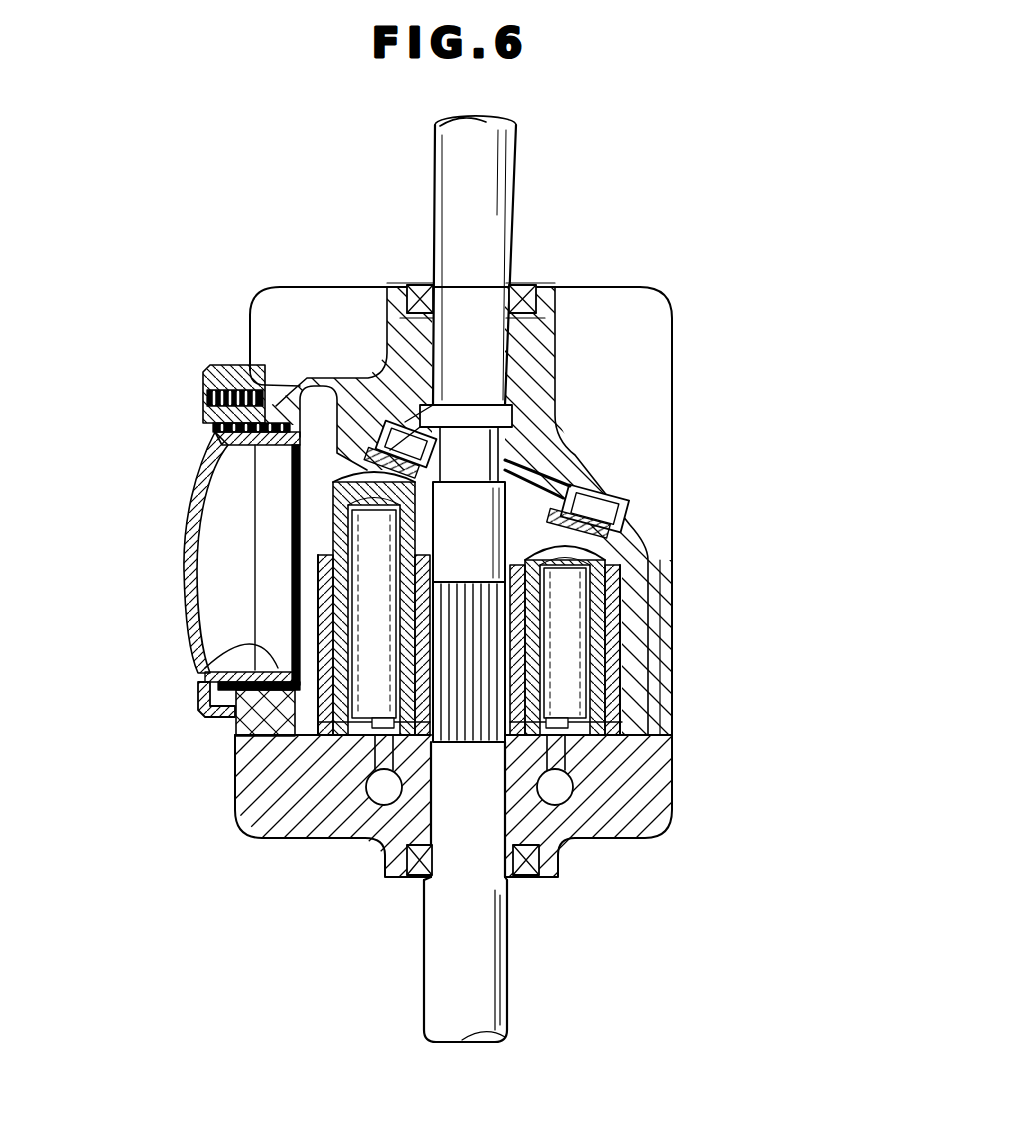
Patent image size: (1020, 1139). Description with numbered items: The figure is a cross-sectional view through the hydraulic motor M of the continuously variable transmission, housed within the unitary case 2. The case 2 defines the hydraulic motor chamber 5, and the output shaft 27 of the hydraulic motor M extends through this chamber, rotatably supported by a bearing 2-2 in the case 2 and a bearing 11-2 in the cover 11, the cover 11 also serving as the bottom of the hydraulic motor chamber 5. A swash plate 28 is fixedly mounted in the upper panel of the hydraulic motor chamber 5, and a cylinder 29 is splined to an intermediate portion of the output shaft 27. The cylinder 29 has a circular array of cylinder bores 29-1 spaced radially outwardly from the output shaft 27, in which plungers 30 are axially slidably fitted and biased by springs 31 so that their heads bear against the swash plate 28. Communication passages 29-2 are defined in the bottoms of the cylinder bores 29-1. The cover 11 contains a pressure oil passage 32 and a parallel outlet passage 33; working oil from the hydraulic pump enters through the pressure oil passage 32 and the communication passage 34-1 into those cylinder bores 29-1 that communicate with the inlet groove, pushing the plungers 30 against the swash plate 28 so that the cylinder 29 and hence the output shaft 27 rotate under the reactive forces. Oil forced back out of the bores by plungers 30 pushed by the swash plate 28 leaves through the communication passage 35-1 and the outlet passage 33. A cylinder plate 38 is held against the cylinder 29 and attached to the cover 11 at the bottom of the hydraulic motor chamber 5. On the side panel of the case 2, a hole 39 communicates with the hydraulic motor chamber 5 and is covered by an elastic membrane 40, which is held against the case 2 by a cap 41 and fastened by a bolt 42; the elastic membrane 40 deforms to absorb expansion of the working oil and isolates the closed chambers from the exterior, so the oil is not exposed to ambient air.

The case 2 is at (600, 430).
The bearing 2-2 is at (515, 372).
The hydraulic motor chamber 5 is at (640, 630).
The cover 11 is at (300, 815).
The bearing 11-2 is at (455, 843).
The output shaft 27 is at (503, 193).
The swash plate 28 is at (620, 532).
The cylinder 29 is at (632, 688).
The cylinder bores 29-1 is at (615, 668).
The communication passages 29-2 is at (385, 720).
The plungers 30 is at (345, 484).
The springs 31 is at (352, 515).
The pressure oil passage 32 is at (382, 790).
The outlet passage 33 is at (556, 795).
The communication passage 34-1 is at (262, 820).
The communication passage 35-1 is at (466, 641).
The cylinder plate 38 is at (615, 742).
The hole 39 is at (205, 668).
The elastic membrane 40 is at (222, 468).
The cap 41 is at (205, 620).
The bolt 42 is at (215, 392).
The hydraulic motor M is at (603, 468).